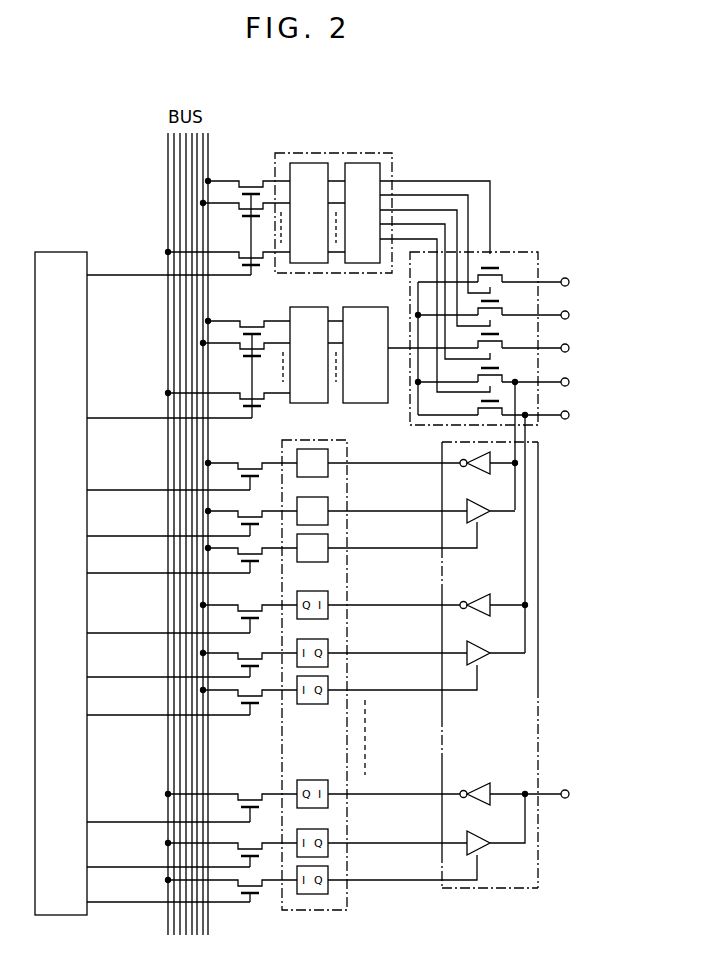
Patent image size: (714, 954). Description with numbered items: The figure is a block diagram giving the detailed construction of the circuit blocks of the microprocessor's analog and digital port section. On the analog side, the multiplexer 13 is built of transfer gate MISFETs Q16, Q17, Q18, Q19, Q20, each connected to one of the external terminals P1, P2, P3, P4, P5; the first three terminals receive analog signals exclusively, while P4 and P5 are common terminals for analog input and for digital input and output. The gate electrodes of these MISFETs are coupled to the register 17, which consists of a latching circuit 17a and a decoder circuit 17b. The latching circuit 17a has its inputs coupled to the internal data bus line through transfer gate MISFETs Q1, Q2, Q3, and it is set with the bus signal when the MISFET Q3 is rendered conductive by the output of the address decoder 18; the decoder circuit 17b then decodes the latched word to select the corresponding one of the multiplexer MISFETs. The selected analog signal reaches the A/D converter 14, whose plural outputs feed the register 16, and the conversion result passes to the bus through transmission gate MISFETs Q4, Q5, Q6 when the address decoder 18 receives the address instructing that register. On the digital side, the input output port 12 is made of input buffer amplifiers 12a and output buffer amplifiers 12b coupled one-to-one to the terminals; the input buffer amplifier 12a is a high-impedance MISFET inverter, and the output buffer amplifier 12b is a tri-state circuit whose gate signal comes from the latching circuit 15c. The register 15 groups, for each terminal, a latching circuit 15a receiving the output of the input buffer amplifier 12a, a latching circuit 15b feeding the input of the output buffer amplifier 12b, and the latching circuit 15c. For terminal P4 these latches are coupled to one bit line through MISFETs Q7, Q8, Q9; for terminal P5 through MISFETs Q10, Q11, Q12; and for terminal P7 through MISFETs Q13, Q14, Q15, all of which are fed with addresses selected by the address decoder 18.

The input output port 12 is at (472, 889).
The input buffer amplifier 12a is at (485, 472).
The output buffer amplifier 12b is at (491, 518).
The multiplexer 13 is at (520, 251).
The A/D converter 14 is at (366, 403).
The register 15 is at (346, 896).
The latching circuit 15a is at (327, 475).
The latching circuit 15b is at (327, 523).
The latching circuit 15c is at (327, 560).
The register 16 is at (305, 403).
The register 17 is at (388, 157).
The latching circuit 17a is at (298, 162).
The decoder circuit 17b is at (356, 162).
The address decoder 18 is at (52, 252).
The transfer gate MISFET Q1 is at (248, 227).
The transfer gate MISFET Q2 is at (246, 213).
The transfer gate MISFET Q3 is at (228, 262).
The transmission gate MISFET Q4 is at (248, 369).
The transmission gate MISFET Q5 is at (246, 353).
The transmission gate MISFET Q6 is at (228, 403).
The transmission gate MISFET Q7 is at (252, 476).
The transmission gate MISFET Q8 is at (252, 523).
The transmission gate MISFET Q9 is at (252, 560).
The transmission MISFET Q10 is at (240, 619).
The transmission MISFET Q11 is at (240, 667).
The transmission MISFET Q12 is at (240, 704).
The transmission gate MISFET Q13 is at (240, 808).
The transmission gate MISFET Q14 is at (240, 857).
The transmission gate MISFET Q15 is at (240, 894).
The transfer gate MISFET Q16 is at (502, 269).
The transfer gate MISFET Q17 is at (505, 303).
The transfer gate MISFET Q18 is at (505, 337).
The transfer gate MISFET Q19 is at (505, 370).
The transfer gate MISFET Q20 is at (505, 404).
The external terminal P1 is at (574, 286).
The external terminal P2 is at (574, 319).
The external terminal P3 is at (574, 352).
The external terminal P4 is at (574, 386).
The external terminal P5 is at (574, 419).
The external terminal P7 is at (556, 798).